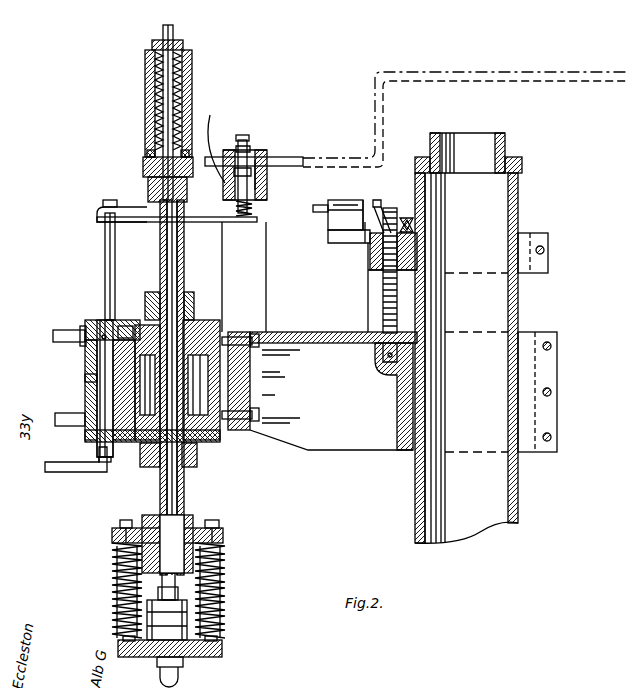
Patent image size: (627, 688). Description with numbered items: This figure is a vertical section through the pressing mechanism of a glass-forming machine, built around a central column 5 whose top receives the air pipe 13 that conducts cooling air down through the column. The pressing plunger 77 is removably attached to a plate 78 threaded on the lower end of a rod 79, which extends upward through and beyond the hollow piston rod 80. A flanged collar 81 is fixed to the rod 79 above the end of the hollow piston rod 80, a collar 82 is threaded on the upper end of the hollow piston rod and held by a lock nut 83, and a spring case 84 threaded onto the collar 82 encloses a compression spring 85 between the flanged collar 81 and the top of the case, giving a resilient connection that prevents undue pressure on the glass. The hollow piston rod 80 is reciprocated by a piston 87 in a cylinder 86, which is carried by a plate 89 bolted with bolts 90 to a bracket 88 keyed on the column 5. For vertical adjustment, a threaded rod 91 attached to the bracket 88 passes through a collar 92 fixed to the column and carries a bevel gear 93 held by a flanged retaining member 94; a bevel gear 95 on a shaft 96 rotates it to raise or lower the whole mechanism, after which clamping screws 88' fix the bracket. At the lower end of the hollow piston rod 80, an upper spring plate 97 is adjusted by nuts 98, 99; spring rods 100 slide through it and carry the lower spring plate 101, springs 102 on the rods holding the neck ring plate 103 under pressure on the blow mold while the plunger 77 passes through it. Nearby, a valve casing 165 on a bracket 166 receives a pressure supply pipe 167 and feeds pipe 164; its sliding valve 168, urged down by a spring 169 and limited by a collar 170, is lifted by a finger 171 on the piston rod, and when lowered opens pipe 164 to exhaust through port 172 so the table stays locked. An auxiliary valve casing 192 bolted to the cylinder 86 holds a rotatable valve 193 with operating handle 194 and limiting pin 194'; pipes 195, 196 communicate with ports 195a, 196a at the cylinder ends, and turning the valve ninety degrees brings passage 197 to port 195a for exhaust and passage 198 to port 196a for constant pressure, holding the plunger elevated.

The central column 5 is at (518, 202).
The pipe 13 is at (505, 137).
The plunger 77 is at (178, 674).
The plate 78 is at (147, 620).
The rod 79 is at (143, 165).
The hollow piston rod 80 is at (184, 292).
The flanged collar 81 is at (146, 153).
The collar 82 is at (148, 187).
The lock nut 83 is at (100, 205).
The spring case 84 is at (145, 80).
The compression spring 85 is at (181, 95).
The cylinder 86 is at (197, 450).
The piston 87 is at (265, 380).
The bracket 88 is at (333, 325).
The clamping screws 88' is at (559, 389).
The plate 89 is at (240, 332).
The bolts 90 is at (262, 348).
The rod 91 is at (383, 297).
The collar 92 is at (370, 262).
The bevel gear 93 is at (406, 218).
The flanged retaining member 94 is at (350, 232).
The bevel gear 95 is at (377, 200).
The shaft 96 is at (320, 203).
The upper spring plate 97 is at (112, 536).
The nut 98 is at (128, 522).
The nut 99 is at (214, 522).
The spring rods 100 is at (112, 570).
The lower spring plate 101 is at (118, 648).
The springs 102 is at (120, 593).
The neck ring plate 103 is at (222, 652).
The pipe 164 is at (290, 158).
The valve casing 165 is at (267, 180).
The bracket 166 is at (266, 270).
The pressure supply pipe 167 is at (228, 150).
The valve 168 is at (252, 148).
The spring 169 is at (253, 209).
The collar 170 is at (243, 140).
The finger 171 is at (205, 214).
The port 172 is at (209, 140).
The auxiliary valve casing 192 is at (85, 357).
The rotatable valve 193 is at (97, 388).
The operating handle 194 is at (74, 473).
The pin 194' is at (57, 373).
The pipe 195 is at (60, 330).
The port 195a is at (125, 326).
The pipe 196 is at (55, 418).
The port 196a is at (150, 462).
The passage 197 is at (103, 337).
The passage 198 is at (97, 442).